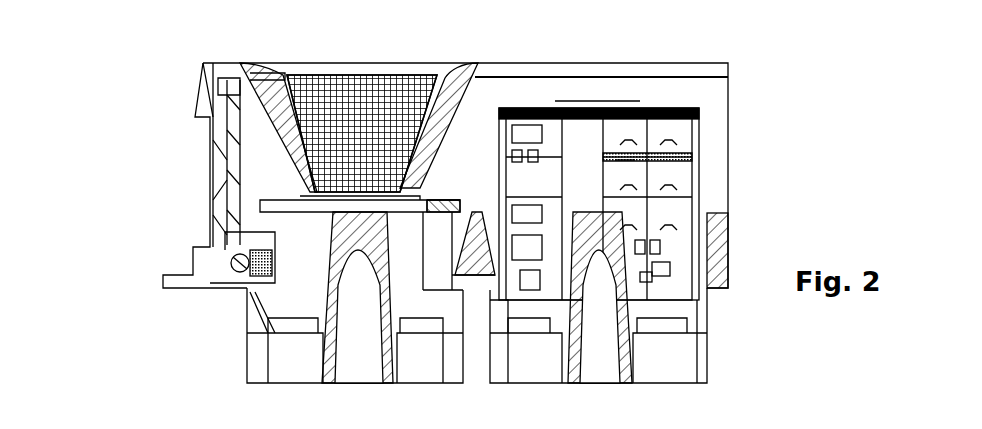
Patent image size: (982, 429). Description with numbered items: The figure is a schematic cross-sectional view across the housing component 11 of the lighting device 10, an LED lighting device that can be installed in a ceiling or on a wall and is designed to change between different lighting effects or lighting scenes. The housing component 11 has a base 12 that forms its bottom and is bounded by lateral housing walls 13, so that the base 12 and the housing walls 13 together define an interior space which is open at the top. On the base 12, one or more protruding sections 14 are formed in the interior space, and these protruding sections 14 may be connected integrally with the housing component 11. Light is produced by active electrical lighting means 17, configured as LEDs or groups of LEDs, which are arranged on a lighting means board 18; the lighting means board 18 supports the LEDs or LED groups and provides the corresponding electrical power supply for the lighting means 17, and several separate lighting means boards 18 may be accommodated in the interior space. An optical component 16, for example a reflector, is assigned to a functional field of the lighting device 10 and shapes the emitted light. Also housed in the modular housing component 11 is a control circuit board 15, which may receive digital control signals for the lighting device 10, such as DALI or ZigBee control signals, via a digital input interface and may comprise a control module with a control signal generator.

The lighting device 10 is at (148, 72).
The housing component 11 is at (742, 110).
The base 12 is at (700, 370).
The housing walls 13 is at (210, 184).
The protruding section 14 is at (345, 279).
The control circuit board 15 is at (668, 100).
The optical component 16 is at (412, 63).
The lighting means 17 is at (355, 208).
The lighting means board 18 is at (448, 190).